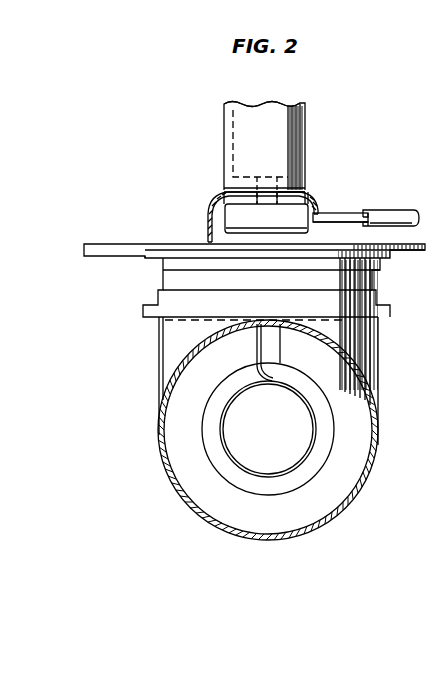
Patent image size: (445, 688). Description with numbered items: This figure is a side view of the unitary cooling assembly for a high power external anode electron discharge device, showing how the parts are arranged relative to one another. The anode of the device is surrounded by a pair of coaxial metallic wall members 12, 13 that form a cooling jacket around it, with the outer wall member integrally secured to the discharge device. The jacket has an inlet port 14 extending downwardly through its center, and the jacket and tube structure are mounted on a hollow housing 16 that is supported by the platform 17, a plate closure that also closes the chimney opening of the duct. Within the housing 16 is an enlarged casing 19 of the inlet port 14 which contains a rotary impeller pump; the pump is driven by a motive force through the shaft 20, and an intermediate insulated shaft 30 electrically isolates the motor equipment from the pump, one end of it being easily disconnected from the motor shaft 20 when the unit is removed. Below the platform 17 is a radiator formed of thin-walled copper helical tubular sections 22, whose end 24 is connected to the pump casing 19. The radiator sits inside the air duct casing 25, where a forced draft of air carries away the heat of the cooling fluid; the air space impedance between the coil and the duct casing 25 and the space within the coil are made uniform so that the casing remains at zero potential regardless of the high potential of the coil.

The coaxial metallic wall member 12 is at (243, 103).
The coaxial metallic wall member 13 is at (224, 150).
The inlet port 14 is at (306, 200).
The hollow housing 16 is at (215, 197).
The platform 17 is at (118, 244).
The enlarged casing 19 is at (237, 215).
The motor shaft 20 is at (383, 210).
The helical tubular sections 22 is at (322, 428).
The end of radiator 24 is at (257, 352).
The air duct casing 25 is at (160, 422).
The insulated shaft 30 is at (340, 213).